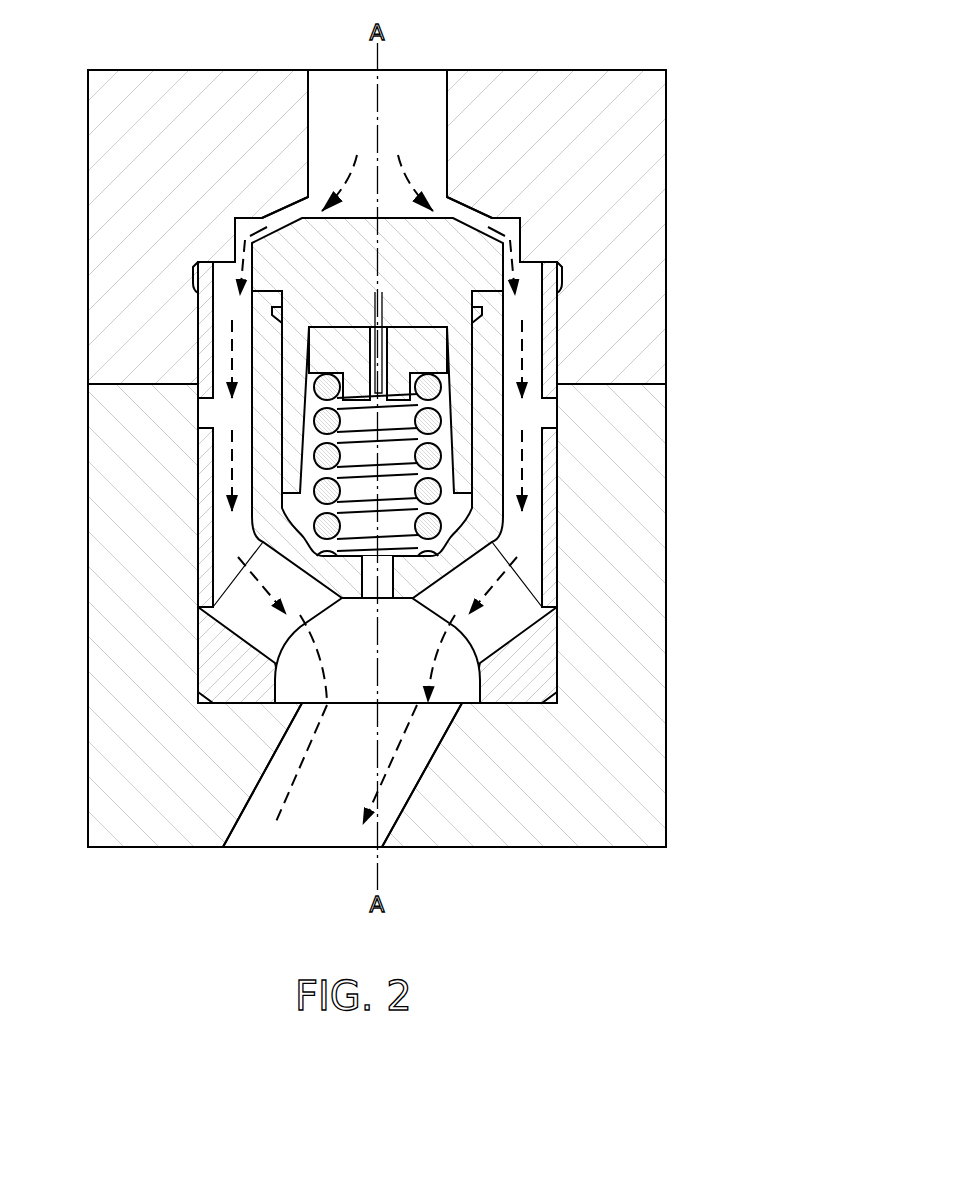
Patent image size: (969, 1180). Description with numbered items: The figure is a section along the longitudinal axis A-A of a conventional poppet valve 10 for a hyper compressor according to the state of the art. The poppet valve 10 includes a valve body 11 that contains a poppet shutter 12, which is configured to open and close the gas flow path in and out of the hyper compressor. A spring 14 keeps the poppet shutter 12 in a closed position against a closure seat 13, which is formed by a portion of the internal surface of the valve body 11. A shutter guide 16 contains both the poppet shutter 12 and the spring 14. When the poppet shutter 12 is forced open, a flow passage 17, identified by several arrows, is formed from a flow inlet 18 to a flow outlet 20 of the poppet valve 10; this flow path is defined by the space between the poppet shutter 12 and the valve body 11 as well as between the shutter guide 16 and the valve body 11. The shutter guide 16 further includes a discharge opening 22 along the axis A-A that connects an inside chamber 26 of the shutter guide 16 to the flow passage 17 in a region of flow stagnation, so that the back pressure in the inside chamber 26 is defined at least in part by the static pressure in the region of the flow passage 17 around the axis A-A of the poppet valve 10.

The poppet valve 10 is at (690, 80).
The valve body 11 is at (640, 442).
The poppet shutter 12 is at (357, 230).
The closure seat 13 is at (438, 207).
The spring 14 is at (323, 493).
The shutter guide 16 is at (265, 409).
The flow passage 17 is at (525, 308).
The flow inlet 18 is at (399, 94).
The flow outlet 20 is at (323, 822).
The discharge opening 22 is at (375, 590).
The inside chamber 26 is at (452, 518).